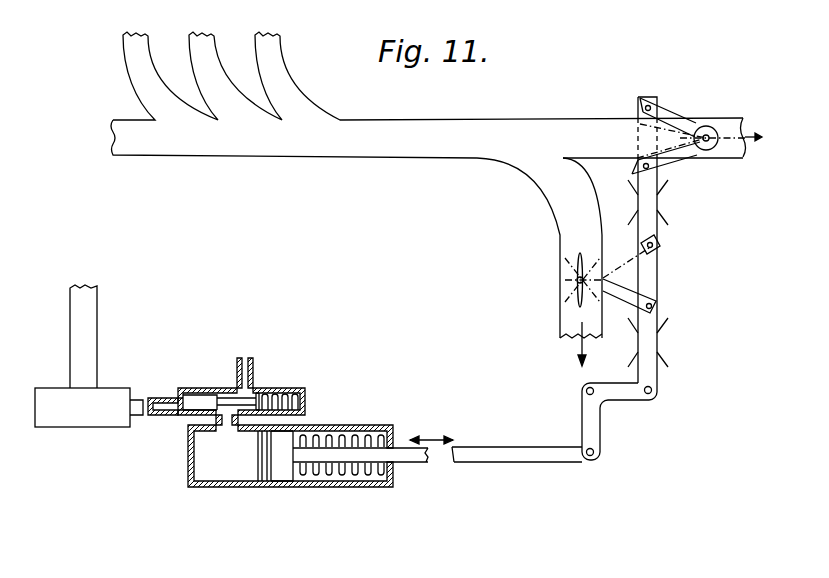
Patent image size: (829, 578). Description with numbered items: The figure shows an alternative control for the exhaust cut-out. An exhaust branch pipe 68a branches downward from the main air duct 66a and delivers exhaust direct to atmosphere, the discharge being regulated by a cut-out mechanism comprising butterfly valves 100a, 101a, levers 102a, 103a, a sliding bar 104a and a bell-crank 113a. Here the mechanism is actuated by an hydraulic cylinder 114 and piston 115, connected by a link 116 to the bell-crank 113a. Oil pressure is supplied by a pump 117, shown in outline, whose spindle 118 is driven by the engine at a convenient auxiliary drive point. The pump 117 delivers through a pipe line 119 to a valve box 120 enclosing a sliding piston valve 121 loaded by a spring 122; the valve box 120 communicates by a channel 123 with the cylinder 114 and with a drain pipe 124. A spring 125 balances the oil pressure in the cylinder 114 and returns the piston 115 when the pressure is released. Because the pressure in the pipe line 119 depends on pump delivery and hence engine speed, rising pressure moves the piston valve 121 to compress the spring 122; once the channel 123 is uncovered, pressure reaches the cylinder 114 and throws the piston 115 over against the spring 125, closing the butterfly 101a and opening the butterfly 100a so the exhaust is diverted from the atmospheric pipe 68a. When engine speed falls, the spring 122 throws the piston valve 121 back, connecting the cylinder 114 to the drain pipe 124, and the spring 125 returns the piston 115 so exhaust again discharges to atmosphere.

The main air duct 66a is at (387, 133).
The exhaust branch pipe 68a is at (565, 223).
The butterfly valve 100a is at (696, 130).
The butterfly valve 101a is at (563, 256).
The lever 102a is at (660, 152).
The lever 103a is at (610, 281).
The sliding bar 104a is at (652, 286).
The bell-crank 113a is at (593, 428).
The hydraulic cylinder 114 is at (220, 488).
The piston 115 is at (281, 466).
The link 116 is at (492, 454).
The pump 117 is at (80, 428).
The spindle 118 is at (87, 318).
The pipe line 119 is at (157, 397).
The valve box 120 is at (197, 388).
The sliding piston valve 121 is at (258, 392).
The spring 122 is at (294, 388).
The channel 123 is at (214, 418).
The drain pipe 124 is at (245, 358).
The spring 125 is at (353, 432).